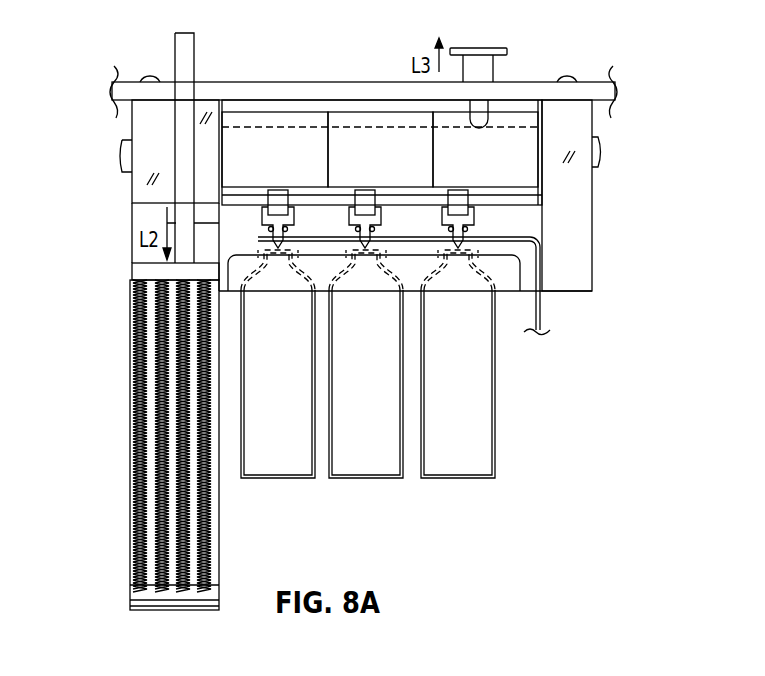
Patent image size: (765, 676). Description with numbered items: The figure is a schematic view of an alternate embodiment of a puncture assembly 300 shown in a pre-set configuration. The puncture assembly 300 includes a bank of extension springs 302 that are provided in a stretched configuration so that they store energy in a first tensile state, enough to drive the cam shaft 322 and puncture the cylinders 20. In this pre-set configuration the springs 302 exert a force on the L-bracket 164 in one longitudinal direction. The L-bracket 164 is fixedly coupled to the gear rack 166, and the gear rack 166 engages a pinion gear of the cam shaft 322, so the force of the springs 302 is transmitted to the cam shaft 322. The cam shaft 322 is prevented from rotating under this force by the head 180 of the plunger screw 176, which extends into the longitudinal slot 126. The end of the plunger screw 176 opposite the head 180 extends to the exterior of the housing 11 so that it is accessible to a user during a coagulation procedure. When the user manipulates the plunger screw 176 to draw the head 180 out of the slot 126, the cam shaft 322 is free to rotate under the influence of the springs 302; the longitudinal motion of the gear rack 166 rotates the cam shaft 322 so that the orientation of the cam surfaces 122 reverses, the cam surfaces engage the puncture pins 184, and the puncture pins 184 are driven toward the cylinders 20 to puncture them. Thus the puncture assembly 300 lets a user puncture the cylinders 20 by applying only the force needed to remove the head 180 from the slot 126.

The puncture assembly 300 is at (137, 41).
The gear rack 166 is at (182, 40).
The plunger screw 176 is at (480, 52).
The longitudinal slot 126 is at (501, 119).
The housing 11 is at (597, 82).
The cam shaft 322 is at (606, 149).
The head 180 is at (479, 129).
The puncture pins 184 is at (458, 205).
The cam surfaces 122 is at (266, 164).
The cylinders 20 is at (290, 460).
The L-bracket 164 is at (135, 285).
The bank of extension springs 302 is at (211, 548).